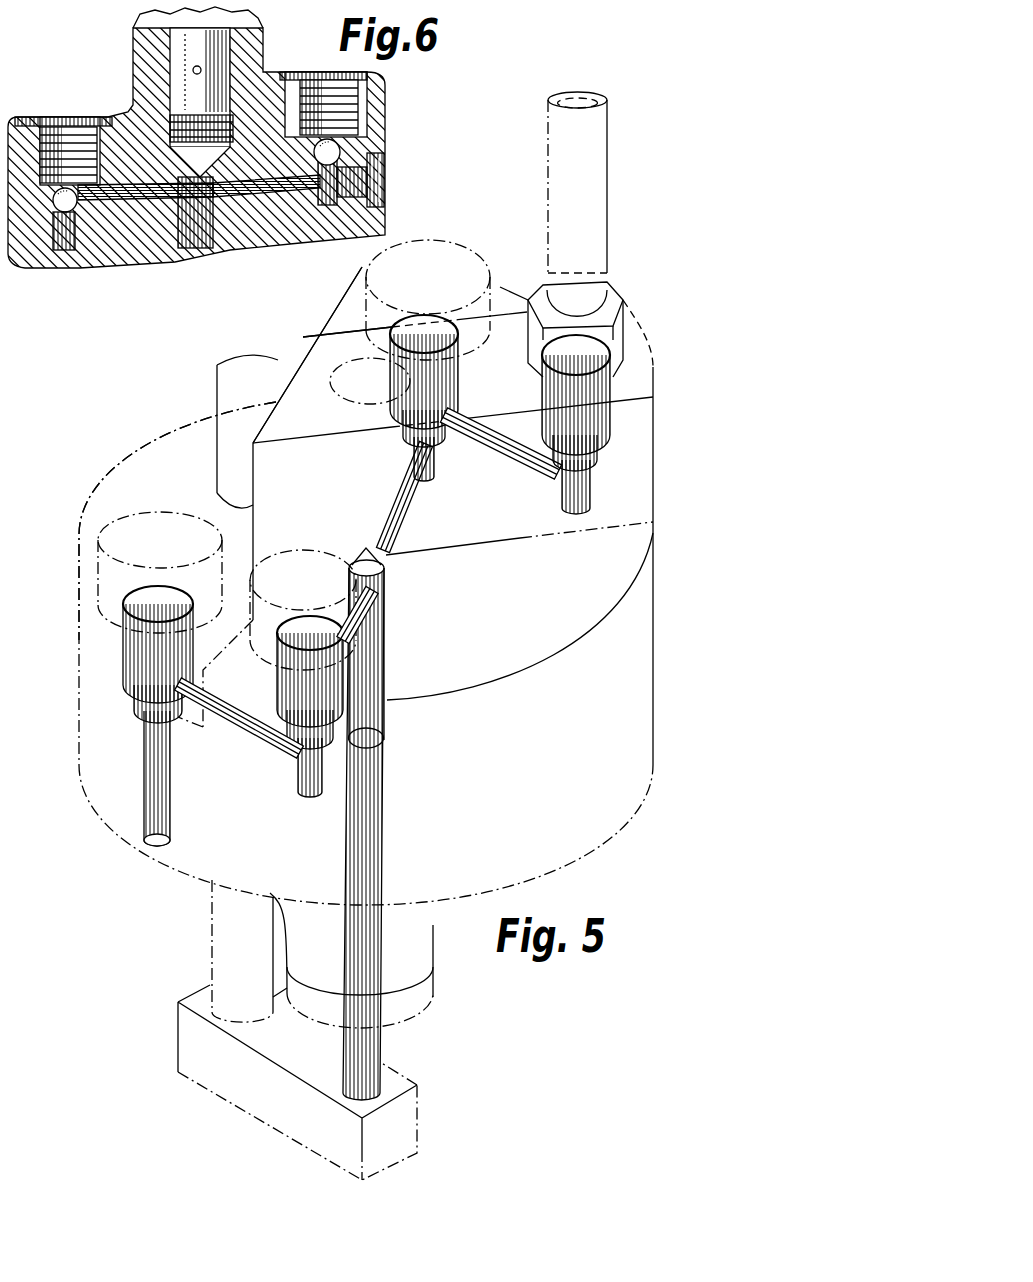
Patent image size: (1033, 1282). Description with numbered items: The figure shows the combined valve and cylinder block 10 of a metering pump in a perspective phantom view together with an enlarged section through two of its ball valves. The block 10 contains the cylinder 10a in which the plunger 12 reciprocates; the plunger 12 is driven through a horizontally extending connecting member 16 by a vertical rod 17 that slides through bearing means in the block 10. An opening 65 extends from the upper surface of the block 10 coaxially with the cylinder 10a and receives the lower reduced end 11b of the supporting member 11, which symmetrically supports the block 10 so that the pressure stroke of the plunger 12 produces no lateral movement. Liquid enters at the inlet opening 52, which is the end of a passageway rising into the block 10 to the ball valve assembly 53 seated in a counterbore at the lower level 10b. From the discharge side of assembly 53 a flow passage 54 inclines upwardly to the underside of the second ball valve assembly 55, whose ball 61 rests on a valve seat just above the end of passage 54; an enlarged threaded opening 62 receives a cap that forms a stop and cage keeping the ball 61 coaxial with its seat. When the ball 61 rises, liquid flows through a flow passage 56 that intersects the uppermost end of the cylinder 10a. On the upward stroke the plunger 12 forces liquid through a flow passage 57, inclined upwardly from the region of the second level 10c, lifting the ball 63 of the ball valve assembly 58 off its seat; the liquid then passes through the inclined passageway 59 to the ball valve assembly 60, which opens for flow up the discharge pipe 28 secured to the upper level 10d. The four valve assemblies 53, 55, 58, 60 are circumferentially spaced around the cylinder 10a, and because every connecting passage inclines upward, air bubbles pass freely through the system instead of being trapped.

In FIG. 6, the combined valve and cylinder block 10 is at (384, 117).
In FIG. 5, the combined valve and cylinder block 10 is at (657, 655).
In FIG. 6, the cylinder 10a is at (202, 248).
In FIG. 5, the cylinder 10a is at (386, 657).
In FIG. 5, the lower level 10b is at (150, 487).
In FIG. 5, the second level 10c is at (616, 575).
In FIG. 5, the upper level 10d is at (641, 378).
In FIG. 6, the supporting member 11 is at (153, 20).
In FIG. 6, the lower reduced end 11b is at (182, 52).
In FIG. 5, the plunger 12 is at (386, 770).
In FIG. 5, the connecting member 16 is at (263, 1112).
In FIG. 5, the vertical rod 17 is at (217, 372).
In FIG. 5, the discharge pipe 28 is at (598, 200).
In FIG. 5, the inlet opening 52 is at (153, 848).
In FIG. 5, the ball valve assembly 53 is at (132, 647).
In FIG. 6, the flow passage 54 is at (50, 233).
In FIG. 5, the flow passage 54 is at (258, 728).
In FIG. 6, the second ball valve assembly 55 is at (55, 103).
In FIG. 5, the second ball valve assembly 55 is at (277, 677).
In FIG. 6, the flow passage 56 is at (134, 199).
In FIG. 5, the flow passage 56 is at (350, 608).
In FIG. 6, the flow passage 57 is at (280, 194).
In FIG. 5, the flow passage 57 is at (418, 494).
In FIG. 6, the ball valve assembly 58 is at (311, 57).
In FIG. 5, the ball valve assembly 58 is at (455, 388).
In FIG. 6, the passageway 59 is at (313, 143).
In FIG. 5, the passageway 59 is at (502, 453).
In FIG. 5, the ball valve assembly 60 is at (611, 407).
In FIG. 6, the ball 61 is at (70, 211).
In FIG. 6, the enlarged opening 62 is at (78, 135).
In FIG. 6, the ball 63 is at (341, 155).
In FIG. 5, the opening 65 is at (347, 392).